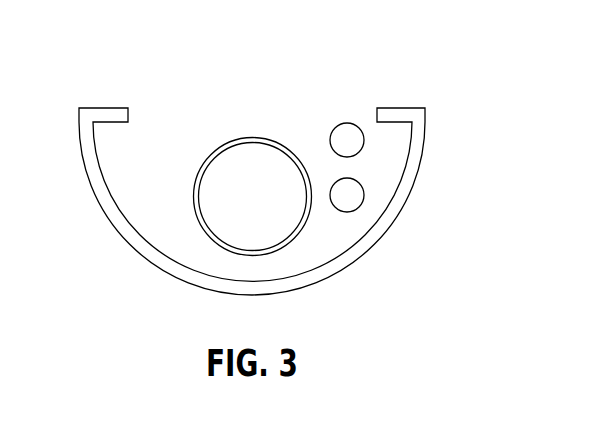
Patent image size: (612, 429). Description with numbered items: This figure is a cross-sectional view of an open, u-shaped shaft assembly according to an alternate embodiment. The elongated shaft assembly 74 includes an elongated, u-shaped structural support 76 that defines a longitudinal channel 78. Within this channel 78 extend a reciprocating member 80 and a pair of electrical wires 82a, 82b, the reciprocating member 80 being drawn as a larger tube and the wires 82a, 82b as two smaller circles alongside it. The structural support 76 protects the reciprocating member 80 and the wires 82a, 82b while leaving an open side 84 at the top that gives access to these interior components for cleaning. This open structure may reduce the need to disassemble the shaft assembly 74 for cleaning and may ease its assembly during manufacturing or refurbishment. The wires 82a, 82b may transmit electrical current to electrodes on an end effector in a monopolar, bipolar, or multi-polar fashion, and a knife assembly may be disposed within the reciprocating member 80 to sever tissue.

The elongated shaft assembly 74 is at (267, 156).
The u-shaped structural support 76 is at (365, 245).
The longitudinal channel 78 is at (160, 179).
The reciprocating member 80 is at (253, 138).
The electrical wire 82a is at (348, 123).
The electrical wire 82b is at (364, 195).
The open side 84 is at (222, 123).